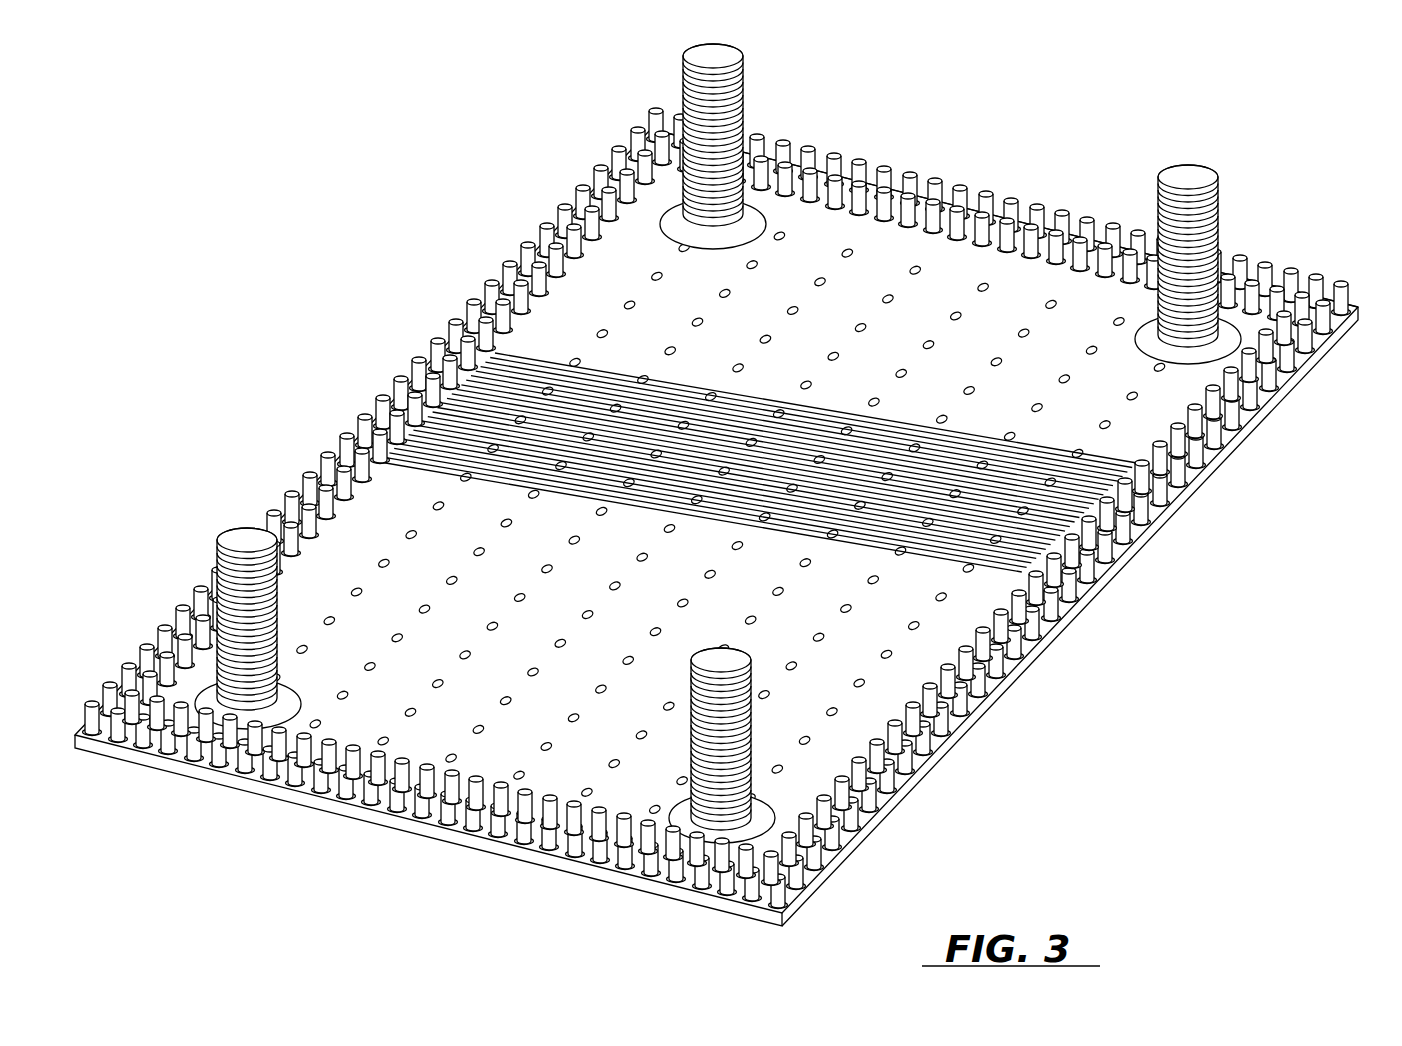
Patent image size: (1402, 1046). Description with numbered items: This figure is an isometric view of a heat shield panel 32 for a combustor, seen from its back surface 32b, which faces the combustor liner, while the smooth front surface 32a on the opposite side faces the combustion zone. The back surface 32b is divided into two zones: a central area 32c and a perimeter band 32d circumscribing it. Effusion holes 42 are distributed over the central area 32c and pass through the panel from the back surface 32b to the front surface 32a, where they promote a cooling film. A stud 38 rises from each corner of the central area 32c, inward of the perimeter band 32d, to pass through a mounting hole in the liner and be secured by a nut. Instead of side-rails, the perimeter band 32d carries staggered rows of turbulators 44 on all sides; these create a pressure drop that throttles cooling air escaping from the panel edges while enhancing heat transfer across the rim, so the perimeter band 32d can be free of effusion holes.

The heat shield panel 32 is at (321, 227).
The front surface 32a is at (518, 864).
The back surface 32b is at (907, 676).
The central area 32c is at (966, 586).
The perimeter band 32d is at (1308, 257).
The stud 38 is at (717, 92).
The effusion holes 42 is at (356, 592).
The turbulators 44 is at (717, 476).